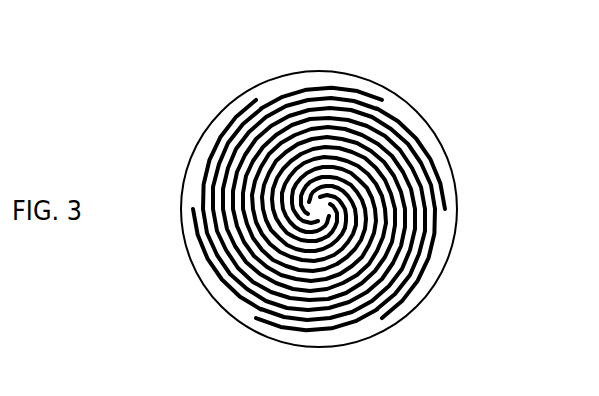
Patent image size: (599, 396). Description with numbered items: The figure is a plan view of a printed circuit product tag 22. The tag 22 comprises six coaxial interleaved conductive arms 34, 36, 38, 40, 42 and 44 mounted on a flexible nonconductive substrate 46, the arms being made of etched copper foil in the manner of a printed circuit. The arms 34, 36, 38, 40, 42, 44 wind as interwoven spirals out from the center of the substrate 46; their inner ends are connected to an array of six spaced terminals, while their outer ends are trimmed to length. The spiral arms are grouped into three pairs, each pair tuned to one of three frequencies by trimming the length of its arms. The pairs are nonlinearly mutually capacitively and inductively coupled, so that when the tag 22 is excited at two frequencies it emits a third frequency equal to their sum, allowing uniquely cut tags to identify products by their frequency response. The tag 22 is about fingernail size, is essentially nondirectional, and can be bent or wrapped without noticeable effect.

The product tag 22 is at (182, 143).
The conductive arm 34 is at (238, 107).
The conductive arm 36 is at (367, 85).
The conductive arm 38 is at (447, 198).
The conductive arm 40 is at (397, 307).
The conductive arm 42 is at (268, 335).
The conductive arm 44 is at (192, 228).
The flexible nonconductive substrate 46 is at (360, 323).